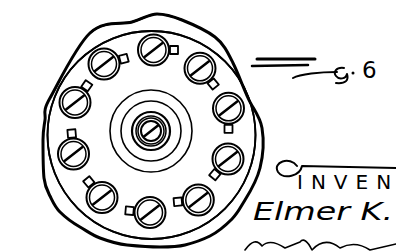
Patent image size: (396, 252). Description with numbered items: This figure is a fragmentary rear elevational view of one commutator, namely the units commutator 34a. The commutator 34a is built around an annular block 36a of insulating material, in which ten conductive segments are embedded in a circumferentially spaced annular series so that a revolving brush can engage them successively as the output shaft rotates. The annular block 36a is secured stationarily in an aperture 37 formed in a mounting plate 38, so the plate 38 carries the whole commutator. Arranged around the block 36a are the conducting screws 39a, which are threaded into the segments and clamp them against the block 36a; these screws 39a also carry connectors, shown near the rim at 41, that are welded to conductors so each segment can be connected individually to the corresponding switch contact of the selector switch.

The units commutator 34a is at (207, 43).
The annular block 36a is at (100, 126).
The aperture 37 is at (76, 199).
The mounting plate 38 is at (88, 221).
The conducting screws 39a is at (72, 97).
The housing rim 41 is at (129, 36).